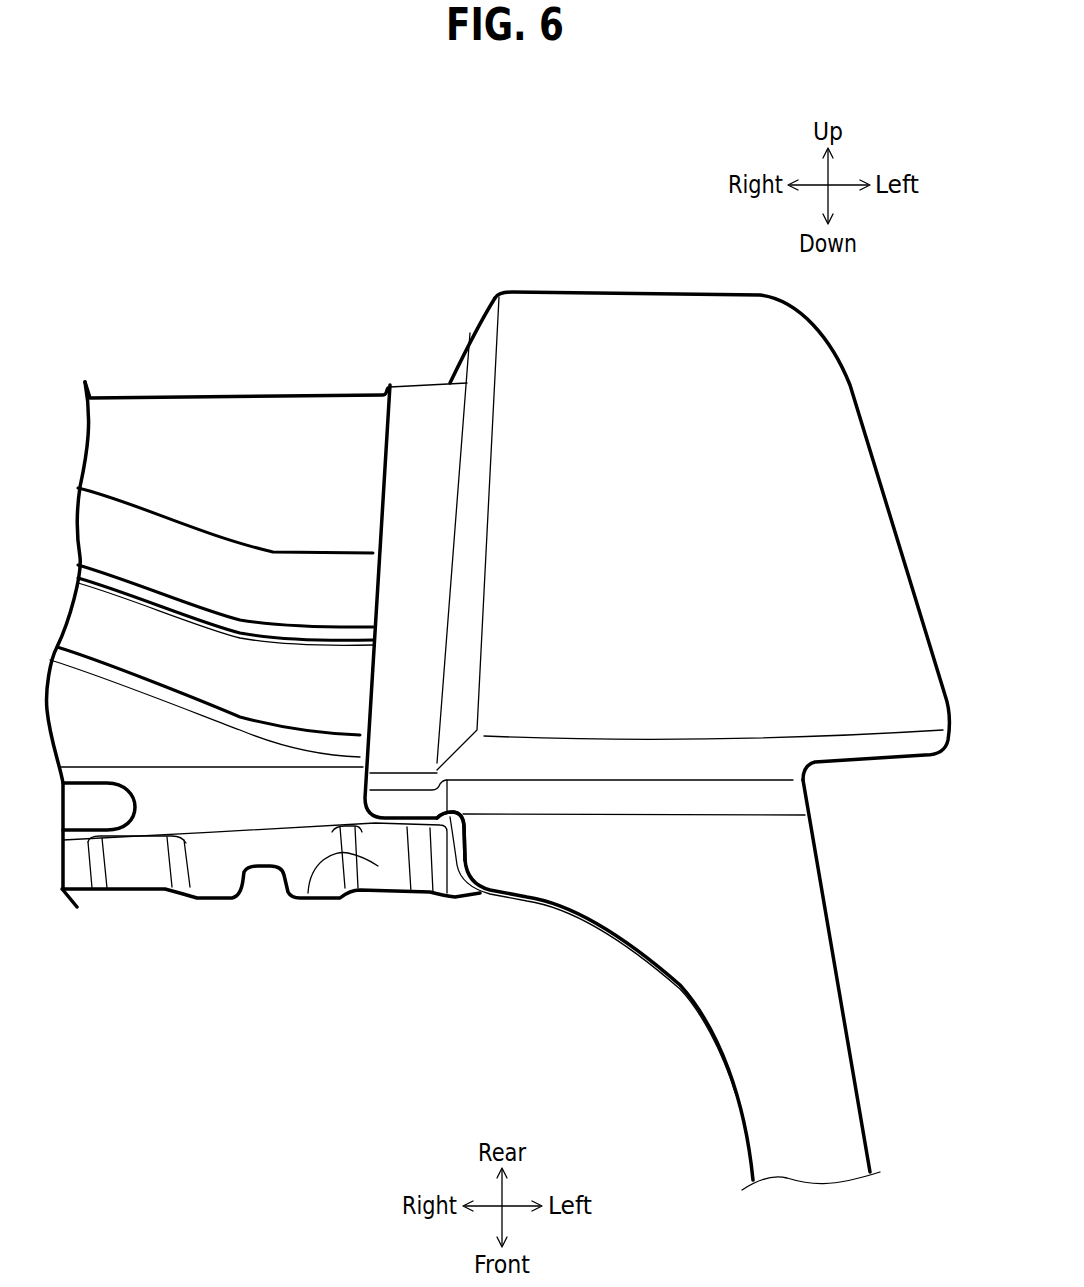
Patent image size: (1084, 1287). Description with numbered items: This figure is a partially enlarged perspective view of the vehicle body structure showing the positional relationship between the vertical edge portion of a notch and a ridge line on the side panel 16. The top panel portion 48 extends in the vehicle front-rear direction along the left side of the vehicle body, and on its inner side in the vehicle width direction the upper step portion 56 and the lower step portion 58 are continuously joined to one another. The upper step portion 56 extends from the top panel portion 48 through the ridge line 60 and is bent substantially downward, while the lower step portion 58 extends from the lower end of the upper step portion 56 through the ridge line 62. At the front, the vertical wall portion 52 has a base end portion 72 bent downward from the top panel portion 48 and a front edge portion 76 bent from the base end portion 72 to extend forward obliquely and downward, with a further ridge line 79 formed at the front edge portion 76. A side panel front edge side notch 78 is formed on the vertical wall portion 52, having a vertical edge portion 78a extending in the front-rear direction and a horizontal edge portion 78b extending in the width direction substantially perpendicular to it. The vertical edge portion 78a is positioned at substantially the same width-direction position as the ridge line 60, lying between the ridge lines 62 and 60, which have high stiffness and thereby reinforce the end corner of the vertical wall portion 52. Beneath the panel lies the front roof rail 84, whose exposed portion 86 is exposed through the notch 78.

The side panel 16 is at (666, 710).
The top panel portion 48 is at (623, 338).
The vertical wall portion 52 is at (666, 820).
The upper step portion 56 is at (482, 345).
The lower step portion 58 is at (418, 407).
The ridge line 60 is at (483, 507).
The ridge line 62 is at (448, 585).
The base end portion 72 is at (727, 768).
The front edge portion 76 is at (743, 900).
The side panel front edge side notch 78 is at (447, 929).
The vertical edge portion 78a is at (452, 857).
The horizontal edge portion 78b is at (408, 830).
The ridge line 79 is at (668, 817).
The front roof rail 84 is at (302, 914).
The exposed portion 86 is at (308, 885).